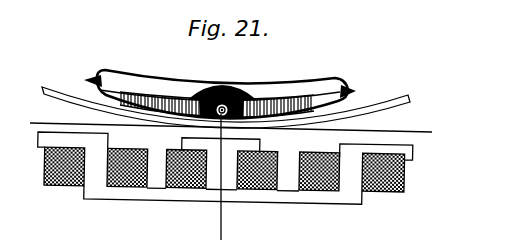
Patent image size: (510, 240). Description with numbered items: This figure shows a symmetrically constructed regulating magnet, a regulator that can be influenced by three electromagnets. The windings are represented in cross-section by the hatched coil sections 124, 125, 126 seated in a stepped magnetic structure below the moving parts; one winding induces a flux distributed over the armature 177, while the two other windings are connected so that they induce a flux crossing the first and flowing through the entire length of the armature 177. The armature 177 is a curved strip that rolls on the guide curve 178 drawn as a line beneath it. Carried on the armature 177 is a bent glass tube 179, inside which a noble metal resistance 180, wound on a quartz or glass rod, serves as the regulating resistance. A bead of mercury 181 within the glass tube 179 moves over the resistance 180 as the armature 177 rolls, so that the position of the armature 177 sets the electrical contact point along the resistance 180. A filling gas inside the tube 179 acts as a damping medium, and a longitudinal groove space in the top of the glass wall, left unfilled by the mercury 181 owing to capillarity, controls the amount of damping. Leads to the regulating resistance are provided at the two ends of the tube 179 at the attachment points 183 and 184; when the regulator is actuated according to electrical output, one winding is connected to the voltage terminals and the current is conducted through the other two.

The core / middle winding section 124 is at (256, 219).
The left winding section 125 is at (63, 186).
The right winding section 126 is at (330, 191).
The armature 177 is at (410, 94).
The guide curve 178 is at (432, 132).
The bent glass tube 179 is at (278, 82).
The noble metal resistance 180 is at (152, 95).
The bead of mercury 181 is at (213, 86).
The lead 183 is at (85, 80).
The lead 184 is at (348, 91).